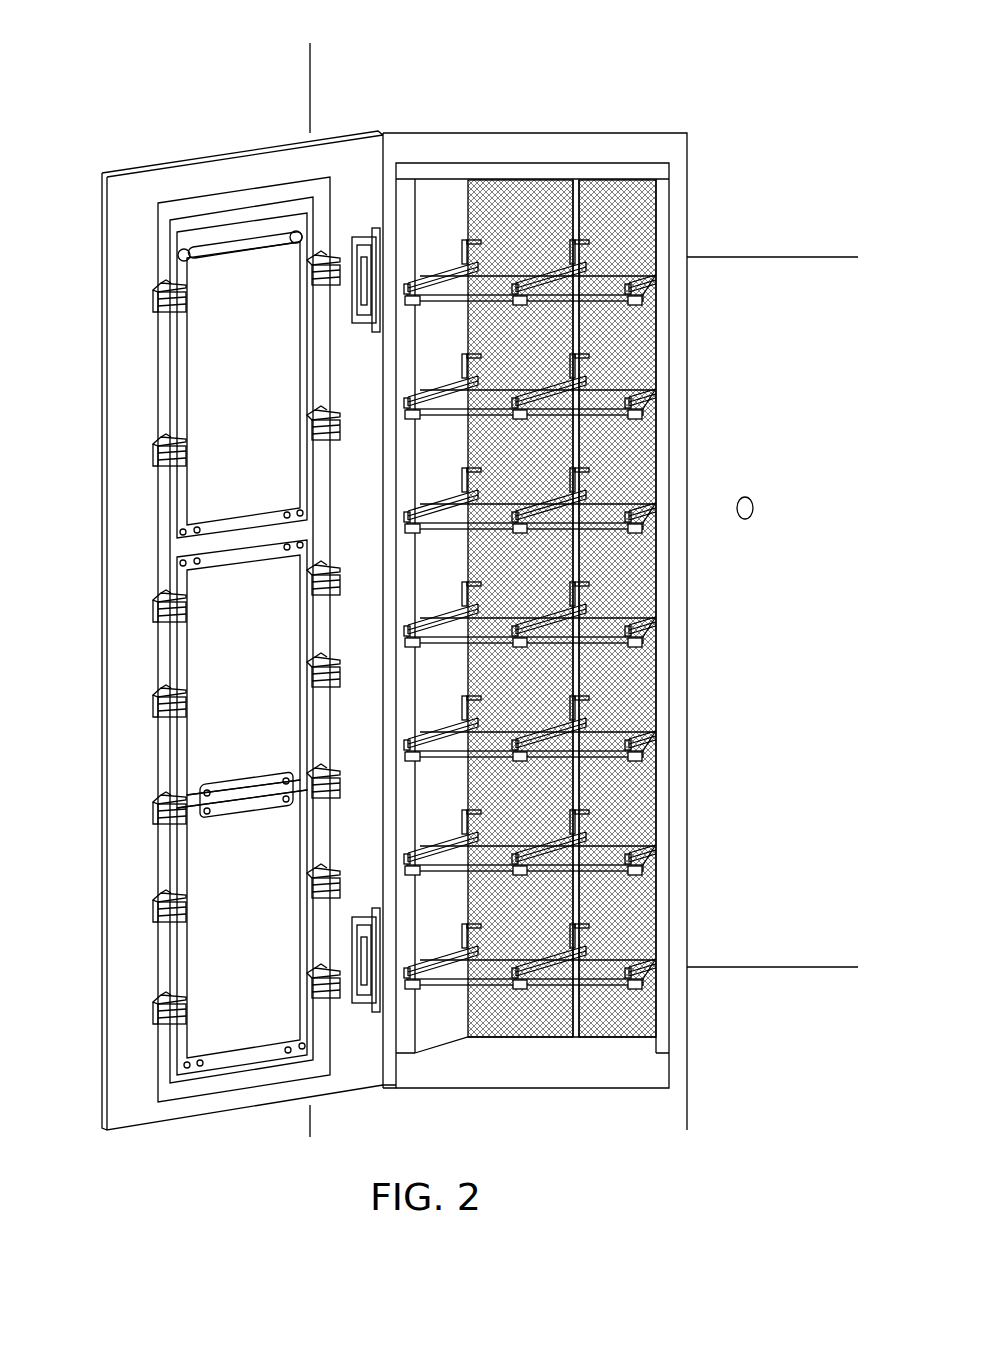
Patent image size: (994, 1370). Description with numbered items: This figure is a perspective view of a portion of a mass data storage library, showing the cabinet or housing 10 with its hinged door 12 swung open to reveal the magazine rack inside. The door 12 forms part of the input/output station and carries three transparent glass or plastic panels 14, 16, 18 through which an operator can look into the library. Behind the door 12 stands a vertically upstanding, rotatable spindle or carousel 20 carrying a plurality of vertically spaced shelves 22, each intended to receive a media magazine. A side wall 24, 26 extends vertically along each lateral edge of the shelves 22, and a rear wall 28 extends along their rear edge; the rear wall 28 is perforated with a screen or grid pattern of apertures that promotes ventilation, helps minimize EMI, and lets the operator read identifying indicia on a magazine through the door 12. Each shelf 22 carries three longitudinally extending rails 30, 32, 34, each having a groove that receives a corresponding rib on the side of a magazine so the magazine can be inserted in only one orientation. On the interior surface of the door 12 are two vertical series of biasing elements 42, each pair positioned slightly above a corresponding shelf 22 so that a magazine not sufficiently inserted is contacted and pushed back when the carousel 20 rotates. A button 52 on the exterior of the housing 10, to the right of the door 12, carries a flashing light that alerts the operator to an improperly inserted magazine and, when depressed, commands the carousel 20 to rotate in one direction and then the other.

The cabinet or housing 10 is at (306, 87).
The hinged door 12 is at (100, 736).
The transparent panel 14 is at (252, 372).
The transparent panel 16 is at (258, 669).
The transparent panel 18 is at (260, 909).
The spindle or carousel 20 is at (606, 1066).
The shelf 22 is at (606, 304).
The side wall 24 is at (432, 190).
The side wall 26 is at (650, 187).
The rear wall 28 is at (533, 231).
The rail 30 is at (432, 267).
The rail 32 is at (540, 268).
The rail 34 is at (657, 266).
The biasing element 42 is at (160, 283).
The button 52 is at (756, 503).